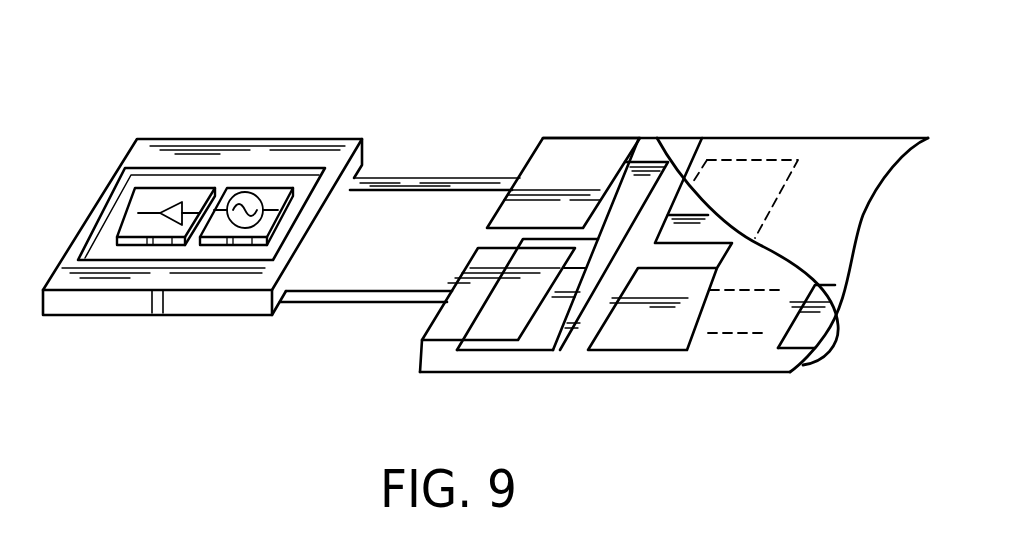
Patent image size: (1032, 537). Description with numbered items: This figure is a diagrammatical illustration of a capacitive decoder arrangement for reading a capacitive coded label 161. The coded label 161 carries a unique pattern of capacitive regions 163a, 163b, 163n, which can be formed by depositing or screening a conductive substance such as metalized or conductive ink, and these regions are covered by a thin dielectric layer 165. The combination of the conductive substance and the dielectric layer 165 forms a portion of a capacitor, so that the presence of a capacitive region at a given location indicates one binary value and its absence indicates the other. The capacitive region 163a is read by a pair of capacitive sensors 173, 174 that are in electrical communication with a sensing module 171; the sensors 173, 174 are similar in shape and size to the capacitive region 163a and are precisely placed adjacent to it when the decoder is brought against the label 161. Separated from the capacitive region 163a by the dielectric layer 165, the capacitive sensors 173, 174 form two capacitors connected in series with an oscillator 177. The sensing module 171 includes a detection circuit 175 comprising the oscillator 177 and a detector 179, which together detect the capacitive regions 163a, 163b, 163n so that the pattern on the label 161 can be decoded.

The capacitive coded label 161 is at (750, 358).
The capacitive region 163a is at (541, 336).
The capacitive region 163b is at (648, 336).
The capacitive region 163n is at (805, 352).
The dielectric layer 165 is at (825, 158).
The sensing module 171 is at (577, 66).
The capacitive sensor 173 is at (598, 158).
The capacitive sensor 174 is at (450, 318).
The detection circuit 175 is at (108, 252).
The oscillator 177 is at (273, 192).
The detector 179 is at (157, 197).